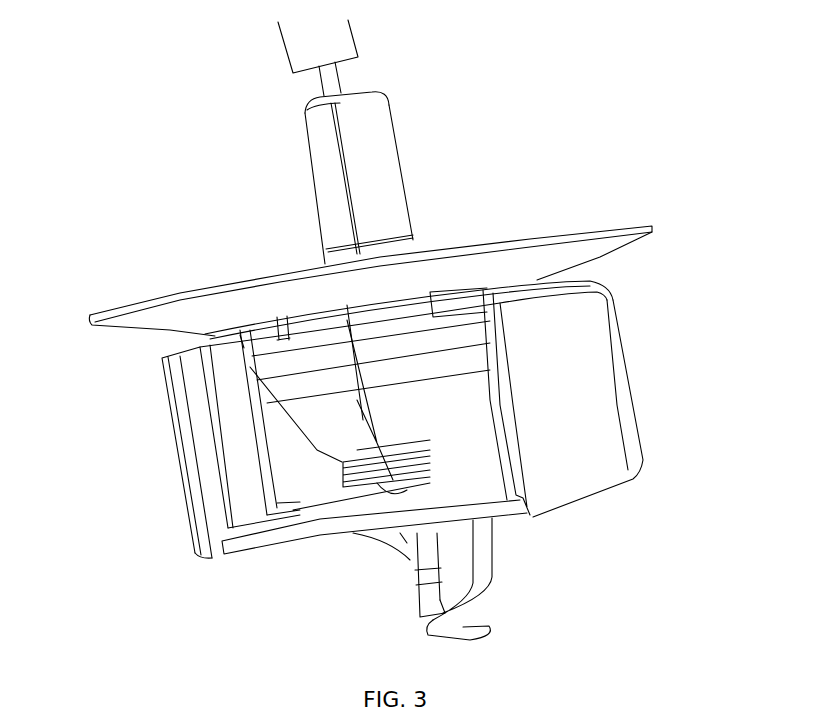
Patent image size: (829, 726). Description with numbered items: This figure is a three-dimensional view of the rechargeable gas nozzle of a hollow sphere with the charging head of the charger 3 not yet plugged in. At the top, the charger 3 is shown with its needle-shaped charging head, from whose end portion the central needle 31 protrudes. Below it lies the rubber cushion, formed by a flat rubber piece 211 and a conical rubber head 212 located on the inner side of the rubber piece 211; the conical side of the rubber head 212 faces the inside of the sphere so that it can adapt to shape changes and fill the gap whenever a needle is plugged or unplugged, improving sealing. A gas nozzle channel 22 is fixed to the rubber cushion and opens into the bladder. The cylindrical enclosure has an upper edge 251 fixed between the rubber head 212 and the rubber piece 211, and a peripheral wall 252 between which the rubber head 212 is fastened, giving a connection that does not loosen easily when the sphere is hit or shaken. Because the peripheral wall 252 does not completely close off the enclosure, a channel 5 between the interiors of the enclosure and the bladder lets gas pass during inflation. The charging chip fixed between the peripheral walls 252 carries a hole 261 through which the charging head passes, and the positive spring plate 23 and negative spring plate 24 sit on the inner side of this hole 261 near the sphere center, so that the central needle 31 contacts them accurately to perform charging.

The charger 3 is at (342, 52).
The gas nozzle channel 22 is at (382, 188).
The rubber piece 211 is at (235, 298).
The upper edge 251 is at (210, 338).
The peripheral wall 252 is at (190, 415).
The rubber head 212 is at (305, 408).
The channel between interiors of the enclosure and the bladder 5 is at (322, 480).
The hole 261 is at (383, 502).
The negative spring plate 24 is at (410, 567).
The central needle 31 is at (417, 587).
The positive spring plate 23 is at (490, 550).